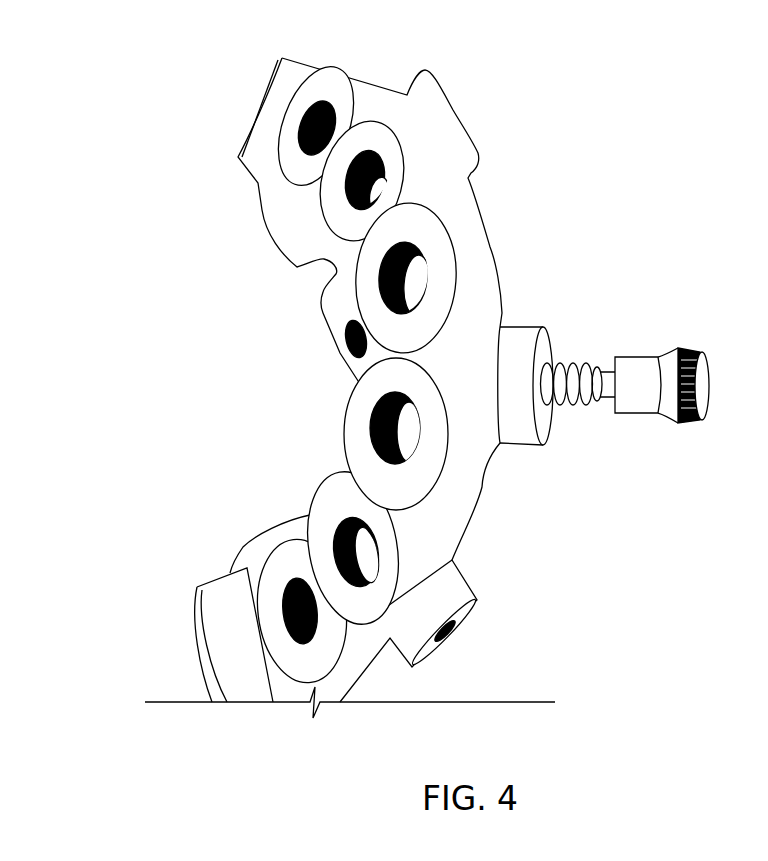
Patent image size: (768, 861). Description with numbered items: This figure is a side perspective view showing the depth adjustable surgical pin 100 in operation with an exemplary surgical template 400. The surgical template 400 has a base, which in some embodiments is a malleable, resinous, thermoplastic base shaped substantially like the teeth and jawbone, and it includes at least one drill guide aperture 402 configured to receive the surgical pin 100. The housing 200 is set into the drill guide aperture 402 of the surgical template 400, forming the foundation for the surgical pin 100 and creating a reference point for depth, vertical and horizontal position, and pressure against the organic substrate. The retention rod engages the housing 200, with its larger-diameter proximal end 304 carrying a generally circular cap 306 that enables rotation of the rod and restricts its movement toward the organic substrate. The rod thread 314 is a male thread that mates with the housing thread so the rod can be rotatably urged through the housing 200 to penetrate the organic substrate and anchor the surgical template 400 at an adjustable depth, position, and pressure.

The depth adjustable surgical pin 100 is at (649, 366).
The housing 200 is at (522, 335).
The proximal end 304 is at (638, 367).
The cap 306 is at (692, 420).
The rod thread 314 is at (575, 393).
The surgical template 400 is at (192, 393).
The drill guide aperture 402 is at (447, 635).